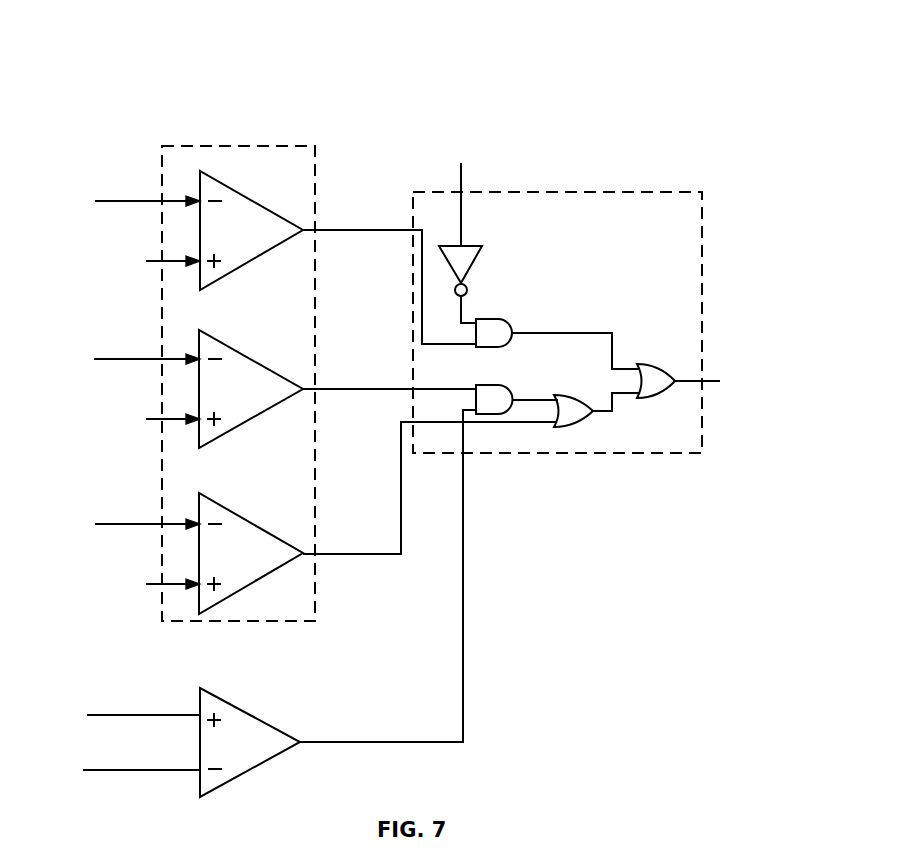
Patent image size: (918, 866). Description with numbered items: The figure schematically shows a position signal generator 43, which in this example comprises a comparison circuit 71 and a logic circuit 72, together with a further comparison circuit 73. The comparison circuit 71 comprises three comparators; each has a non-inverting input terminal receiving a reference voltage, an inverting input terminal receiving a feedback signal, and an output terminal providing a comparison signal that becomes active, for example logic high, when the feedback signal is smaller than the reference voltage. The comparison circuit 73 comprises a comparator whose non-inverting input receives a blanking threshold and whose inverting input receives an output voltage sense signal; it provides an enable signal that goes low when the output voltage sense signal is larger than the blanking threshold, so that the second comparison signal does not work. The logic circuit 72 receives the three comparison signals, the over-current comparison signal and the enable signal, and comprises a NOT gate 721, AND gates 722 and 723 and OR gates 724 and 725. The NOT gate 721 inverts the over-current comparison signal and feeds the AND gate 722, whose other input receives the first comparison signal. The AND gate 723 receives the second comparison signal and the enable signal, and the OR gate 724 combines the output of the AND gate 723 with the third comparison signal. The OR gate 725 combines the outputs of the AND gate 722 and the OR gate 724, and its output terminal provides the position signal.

The position signal generator 43 is at (653, 116).
The comparison circuit 71 is at (209, 147).
The logic circuit 72 is at (515, 192).
The comparison circuit 73 is at (240, 707).
The NOT gate 721 is at (468, 268).
The AND gate 722 is at (494, 319).
The AND gate 723 is at (481, 385).
The OR gate 724 is at (563, 395).
The OR gate 725 is at (640, 367).